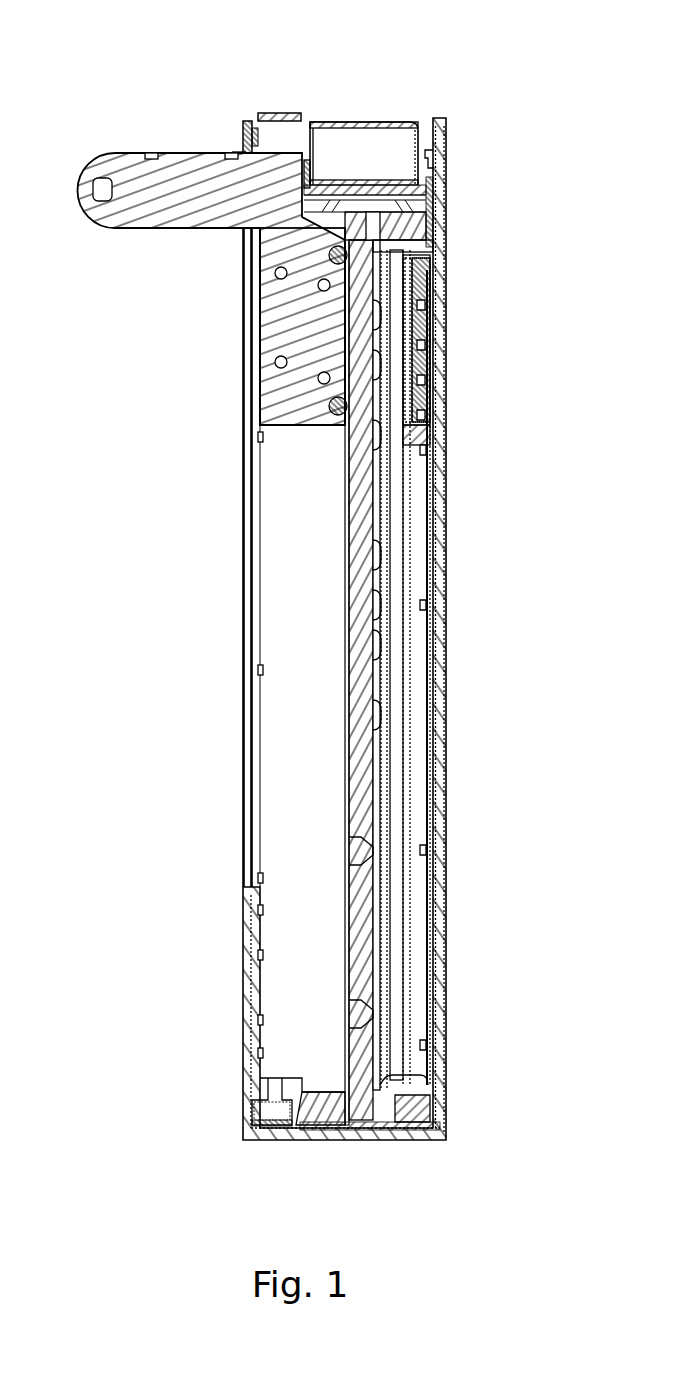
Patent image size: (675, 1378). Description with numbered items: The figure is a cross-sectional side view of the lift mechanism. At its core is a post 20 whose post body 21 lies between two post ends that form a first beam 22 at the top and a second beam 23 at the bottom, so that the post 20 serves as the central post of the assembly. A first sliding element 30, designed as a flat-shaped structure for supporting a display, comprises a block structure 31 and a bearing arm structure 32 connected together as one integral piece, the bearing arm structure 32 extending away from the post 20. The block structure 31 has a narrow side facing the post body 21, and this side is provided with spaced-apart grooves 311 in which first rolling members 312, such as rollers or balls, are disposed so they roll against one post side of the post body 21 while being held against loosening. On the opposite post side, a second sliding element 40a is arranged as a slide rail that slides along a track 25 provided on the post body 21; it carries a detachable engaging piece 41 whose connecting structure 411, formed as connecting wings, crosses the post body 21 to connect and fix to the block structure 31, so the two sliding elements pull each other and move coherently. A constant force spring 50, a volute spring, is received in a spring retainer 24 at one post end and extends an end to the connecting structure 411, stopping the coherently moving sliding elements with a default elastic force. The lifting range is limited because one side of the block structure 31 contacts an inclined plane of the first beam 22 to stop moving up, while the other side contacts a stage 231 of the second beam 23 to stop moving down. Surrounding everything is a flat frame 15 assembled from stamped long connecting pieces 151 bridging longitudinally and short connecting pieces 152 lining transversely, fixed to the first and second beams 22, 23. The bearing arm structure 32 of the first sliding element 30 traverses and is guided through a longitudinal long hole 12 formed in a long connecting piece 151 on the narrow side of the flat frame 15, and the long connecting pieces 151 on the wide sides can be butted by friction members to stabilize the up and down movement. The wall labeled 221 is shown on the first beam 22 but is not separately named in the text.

The longitudinal long hole 12 is at (236, 152).
The flat frame 15 is at (330, 52).
The long connecting piece 151 is at (246, 120).
The short connecting piece 152 is at (330, 190).
The post 20 is at (170, 978).
The post body 21 is at (358, 966).
The first beam 22 is at (400, 212).
The side wall of top cover 221 is at (278, 248).
The second beam 23 is at (262, 1112).
The stage 231 is at (335, 1065).
The spring retainer 24 is at (405, 195).
The track 25 is at (390, 247).
The first sliding element 30 is at (132, 343).
The block structure 31 is at (268, 368).
The groove 311 is at (342, 271).
The first rolling member 312 is at (328, 262).
The bearing arm structure 32 is at (173, 213).
The second sliding element 40a is at (420, 312).
The engaging piece 41 is at (428, 384).
The connecting structure 411 is at (388, 450).
The constant force spring 50 is at (420, 122).